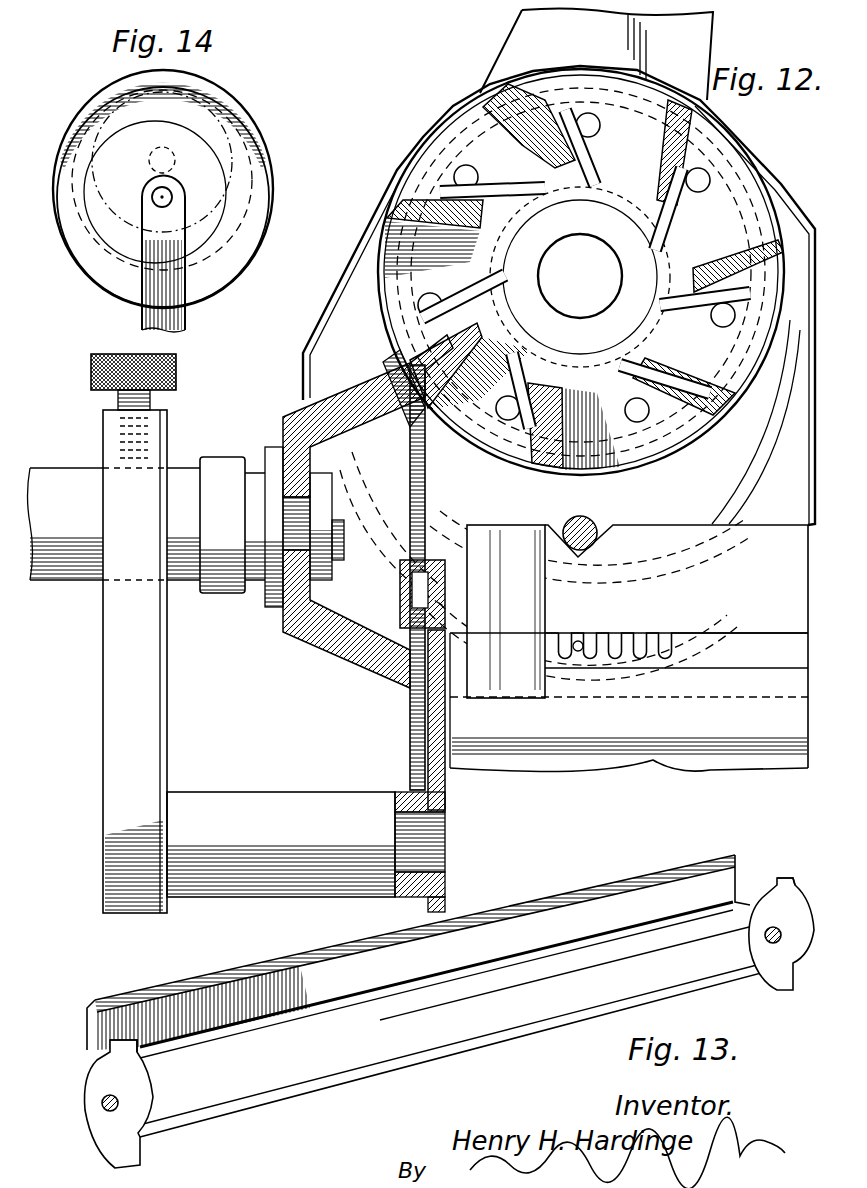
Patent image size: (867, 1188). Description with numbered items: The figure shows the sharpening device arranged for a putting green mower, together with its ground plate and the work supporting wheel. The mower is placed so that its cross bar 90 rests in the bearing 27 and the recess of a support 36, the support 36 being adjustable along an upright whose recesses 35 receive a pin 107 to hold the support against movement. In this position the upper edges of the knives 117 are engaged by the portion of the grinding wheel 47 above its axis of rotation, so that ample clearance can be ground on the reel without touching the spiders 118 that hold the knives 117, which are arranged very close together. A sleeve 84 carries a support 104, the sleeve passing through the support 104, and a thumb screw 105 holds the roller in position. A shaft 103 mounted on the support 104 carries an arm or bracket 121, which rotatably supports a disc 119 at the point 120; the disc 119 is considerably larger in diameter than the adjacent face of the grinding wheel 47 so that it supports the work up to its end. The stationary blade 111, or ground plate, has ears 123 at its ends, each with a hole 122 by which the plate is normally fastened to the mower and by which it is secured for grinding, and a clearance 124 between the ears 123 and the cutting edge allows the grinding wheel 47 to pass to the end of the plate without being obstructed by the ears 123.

In FIG. 12, the knives 117 is at (405, 330).
In FIG. 12, the spiders 118 is at (540, 268).
In FIG. 14, the disc 119 is at (262, 205).
In FIG. 12, the disc 119 is at (427, 502).
In FIG. 14, the rotatable support 120 is at (172, 194).
In FIG. 12, the rotatable support 120 is at (441, 583).
In FIG. 14, the arm or bracket 121 is at (168, 270).
In FIG. 12, the arm or bracket 121 is at (440, 738).
In FIG. 14, the grinding wheel 47 is at (232, 87).
In FIG. 12, the grinding wheel 47 is at (372, 392).
In FIG. 12, the sleeve 84 is at (86, 570).
In FIG. 12, the support 104 is at (165, 712).
In FIG. 12, the thumb screw 105 is at (90, 382).
In FIG. 12, the shaft 103 is at (293, 802).
In FIG. 12, the support 36 is at (753, 535).
In FIG. 12, the bearing 27 is at (600, 538).
In FIG. 12, the cross bar 90 is at (597, 520).
In FIG. 12, the recesses 35 is at (675, 657).
In FIG. 12, the pin 107 is at (578, 652).
In FIG. 13, the stationary blade 111 is at (352, 1075).
In FIG. 13, the hole 122 is at (105, 1108).
In FIG. 13, the ears 123 is at (100, 1075).
In FIG. 13, the clearance 124 is at (90, 1048).